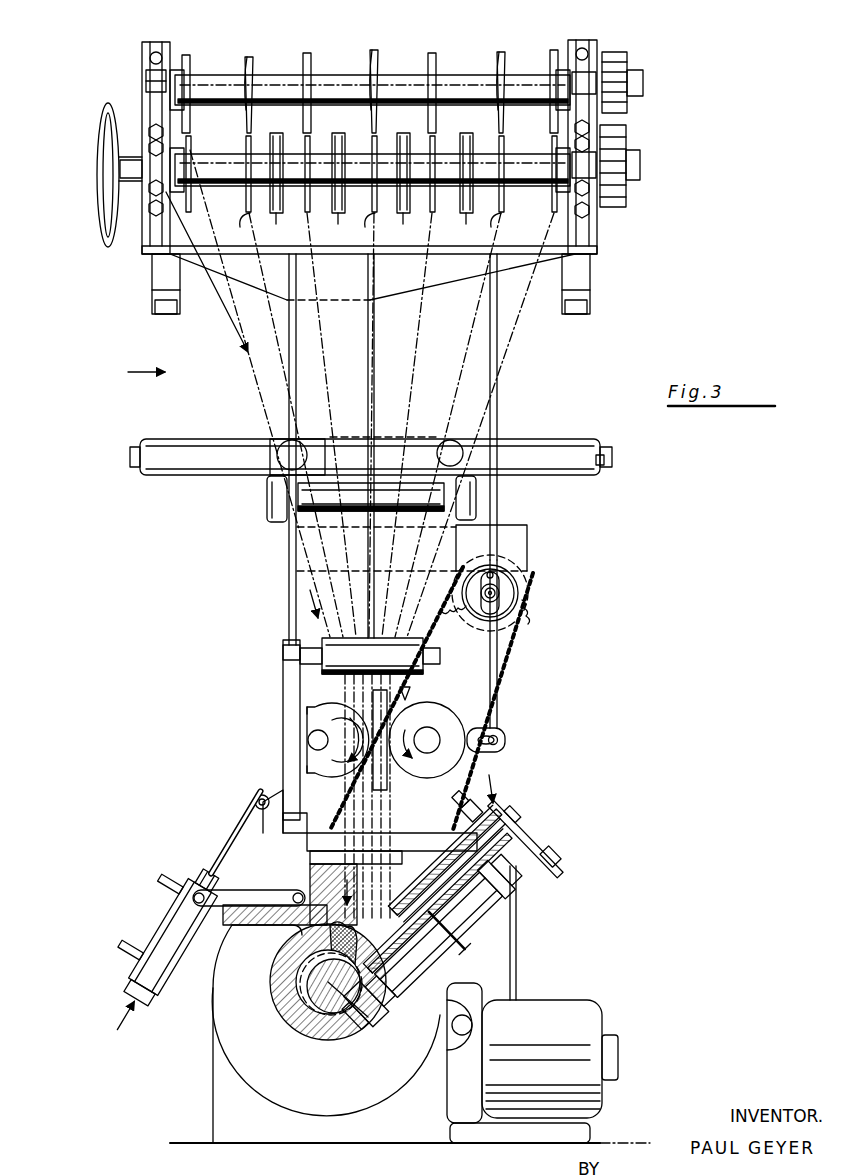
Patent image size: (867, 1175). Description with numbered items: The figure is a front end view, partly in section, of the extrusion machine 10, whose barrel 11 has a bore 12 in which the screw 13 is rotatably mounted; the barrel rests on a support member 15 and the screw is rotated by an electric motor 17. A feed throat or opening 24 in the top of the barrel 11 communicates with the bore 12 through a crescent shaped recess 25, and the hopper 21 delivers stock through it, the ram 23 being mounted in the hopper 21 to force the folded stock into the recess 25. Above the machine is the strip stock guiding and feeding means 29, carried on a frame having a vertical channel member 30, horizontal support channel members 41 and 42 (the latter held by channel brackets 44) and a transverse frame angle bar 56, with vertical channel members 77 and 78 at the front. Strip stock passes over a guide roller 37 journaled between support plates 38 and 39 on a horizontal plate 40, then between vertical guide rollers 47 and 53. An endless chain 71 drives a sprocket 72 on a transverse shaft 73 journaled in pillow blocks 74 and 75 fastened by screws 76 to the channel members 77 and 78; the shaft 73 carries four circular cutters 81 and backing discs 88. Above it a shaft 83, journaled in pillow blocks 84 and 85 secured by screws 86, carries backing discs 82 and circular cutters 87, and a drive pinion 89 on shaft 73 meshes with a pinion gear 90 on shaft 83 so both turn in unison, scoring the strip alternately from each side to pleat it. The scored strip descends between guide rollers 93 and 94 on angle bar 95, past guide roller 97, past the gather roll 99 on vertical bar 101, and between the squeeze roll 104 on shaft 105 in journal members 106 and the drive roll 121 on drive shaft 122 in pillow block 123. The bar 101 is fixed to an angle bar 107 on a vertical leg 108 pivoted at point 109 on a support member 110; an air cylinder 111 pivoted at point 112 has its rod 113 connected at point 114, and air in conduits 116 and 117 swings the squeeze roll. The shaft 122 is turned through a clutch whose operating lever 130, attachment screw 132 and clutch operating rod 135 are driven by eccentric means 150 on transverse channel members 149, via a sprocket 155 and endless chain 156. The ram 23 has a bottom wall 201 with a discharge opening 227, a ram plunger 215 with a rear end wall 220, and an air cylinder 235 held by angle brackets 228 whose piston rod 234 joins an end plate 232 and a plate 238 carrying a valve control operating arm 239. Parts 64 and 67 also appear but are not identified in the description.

The extrusion machine 10 is at (205, 1040).
The barrel 11 is at (326, 1040).
The bore 12 is at (300, 980).
The screw 13 is at (334, 986).
The support member 15 is at (356, 1132).
The electric motor 17 is at (580, 1010).
The hopper 21 is at (420, 880).
The ram 23 is at (535, 826).
The feed throat or opening 24 is at (330, 944).
The crescent shaped recess 25 is at (380, 1000).
The strip stock guiding and feeding means 29 is at (128, 372).
The vertical channel member 30 is at (288, 612).
The guide roller 37 is at (548, 450).
The support plate 38 is at (612, 454).
The support plate 39 is at (130, 458).
The horizontal plate 40 is at (600, 468).
The horizontal support channel member 41 is at (268, 516).
The horizontal support channel member 42 is at (476, 514).
The channel bracket 44 is at (426, 524).
The guide roller 47 is at (591, 282).
The guide roller 53 is at (155, 280).
The transverse frame angle bar 56 is at (230, 276).
The handwheel 64 is at (102, 130).
The rod 67 is at (498, 362).
The endless chain 71 is at (282, 114).
The sprocket 72 is at (280, 212).
The transverse shaft 73 is at (522, 152).
The pillow block 74 is at (148, 208).
The pillow block 75 is at (590, 190).
The screw 76 is at (148, 150).
The vertical channel member 77 is at (150, 244).
The vertical channel member 78 is at (598, 238).
The circular cutter 81 is at (191, 150).
The backing disc 82 is at (190, 68).
The transverse shaft 83 is at (403, 76).
The pillow block 84 is at (146, 78).
The pillow block 85 is at (584, 74).
The screw 86 is at (150, 58).
The circular cutter 87 is at (252, 62).
The backing disc 88 is at (373, 228).
The drive pinion 89 is at (612, 162).
The pinion gear 90 is at (643, 82).
The guide roller 93 is at (284, 444).
The guide roller 94 is at (452, 440).
The horizontal angle bar 95 is at (410, 440).
The guide roller 97 is at (320, 494).
The gather roll 99 is at (330, 652).
The vertical bar 101 is at (284, 730).
The squeeze roll 104 is at (312, 770).
The shaft 105 is at (308, 742).
The journal member 106 is at (312, 714).
The horizontal angle bar 107 is at (264, 796).
The vertical leg 108 is at (306, 840).
The pivot point 109 is at (296, 892).
The horizontal support member 110 is at (212, 940).
The air cylinder 111 is at (114, 1009).
The pivot point 112 is at (202, 876).
The cylinder rod 113 is at (244, 830).
The pivot point 114 is at (270, 801).
The conduit 116 is at (164, 900).
The conduit 117 is at (126, 962).
The drive roll 121 is at (436, 718).
The horizontal drive shaft 122 is at (430, 745).
The pillow block 123 is at (410, 692).
The clutch operating lever 130 is at (472, 730).
The attachment screw 132 is at (500, 738).
The clutch operating rod 135 is at (498, 672).
The transverse channel member 149 is at (528, 542).
The eccentric means 150 is at (500, 596).
The sprocket 155 is at (522, 614).
The endless chain 156 is at (496, 696).
The bottom plate or wall 201 is at (462, 996).
The ram slide or plunger 215 is at (492, 781).
The rear end wall 220 is at (530, 816).
The escape or discharge opening 227 is at (461, 928).
The angle bracket 228 is at (516, 900).
The end plate 232 is at (540, 838).
The piston rod 234 is at (565, 860).
The air cylinder 235 is at (506, 940).
The plate 238 is at (598, 890).
The valve control operating arm 239 is at (574, 910).